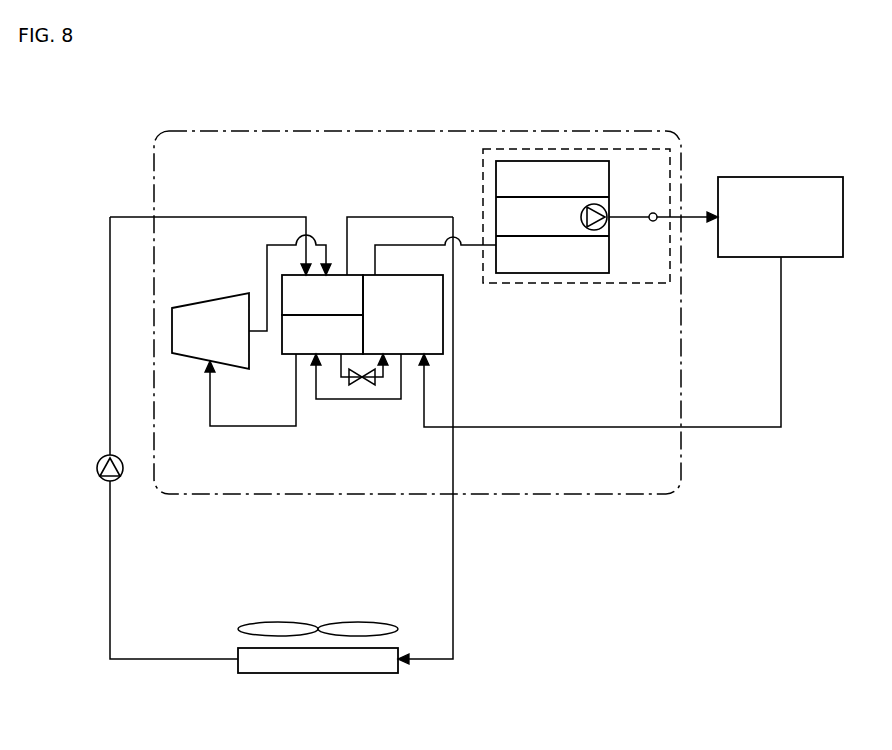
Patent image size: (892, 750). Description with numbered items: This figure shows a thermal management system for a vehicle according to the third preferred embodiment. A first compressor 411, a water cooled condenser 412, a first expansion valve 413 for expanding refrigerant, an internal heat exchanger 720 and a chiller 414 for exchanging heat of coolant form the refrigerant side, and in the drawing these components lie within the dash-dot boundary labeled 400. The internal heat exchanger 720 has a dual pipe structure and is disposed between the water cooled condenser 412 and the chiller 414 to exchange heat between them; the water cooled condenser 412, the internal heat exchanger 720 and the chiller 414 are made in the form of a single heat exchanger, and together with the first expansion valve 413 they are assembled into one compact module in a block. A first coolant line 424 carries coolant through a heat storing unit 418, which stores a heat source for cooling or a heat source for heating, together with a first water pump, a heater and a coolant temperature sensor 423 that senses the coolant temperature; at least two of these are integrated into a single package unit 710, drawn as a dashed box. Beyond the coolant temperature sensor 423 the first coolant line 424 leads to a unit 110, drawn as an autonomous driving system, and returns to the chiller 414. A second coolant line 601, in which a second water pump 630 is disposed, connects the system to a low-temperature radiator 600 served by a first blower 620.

The heat pump module 400 is at (418, 131).
The package unit 710 is at (592, 149).
The heat storing unit 418 is at (555, 161).
The coolant temperature sensor 423 is at (654, 213).
The autonomous driving system 110 is at (783, 177).
The first coolant line 424 is at (781, 333).
The first compressor 411 is at (212, 298).
The water cooled condenser 412 is at (340, 273).
The internal heat exchanger 720 is at (287, 356).
The first expansion valve 413 is at (366, 386).
The chiller 414 is at (443, 321).
The second water pump 630 is at (97, 468).
The second coolant line 601 is at (453, 590).
The first blower 620 is at (280, 622).
The low-temperature radiator 600 is at (373, 674).